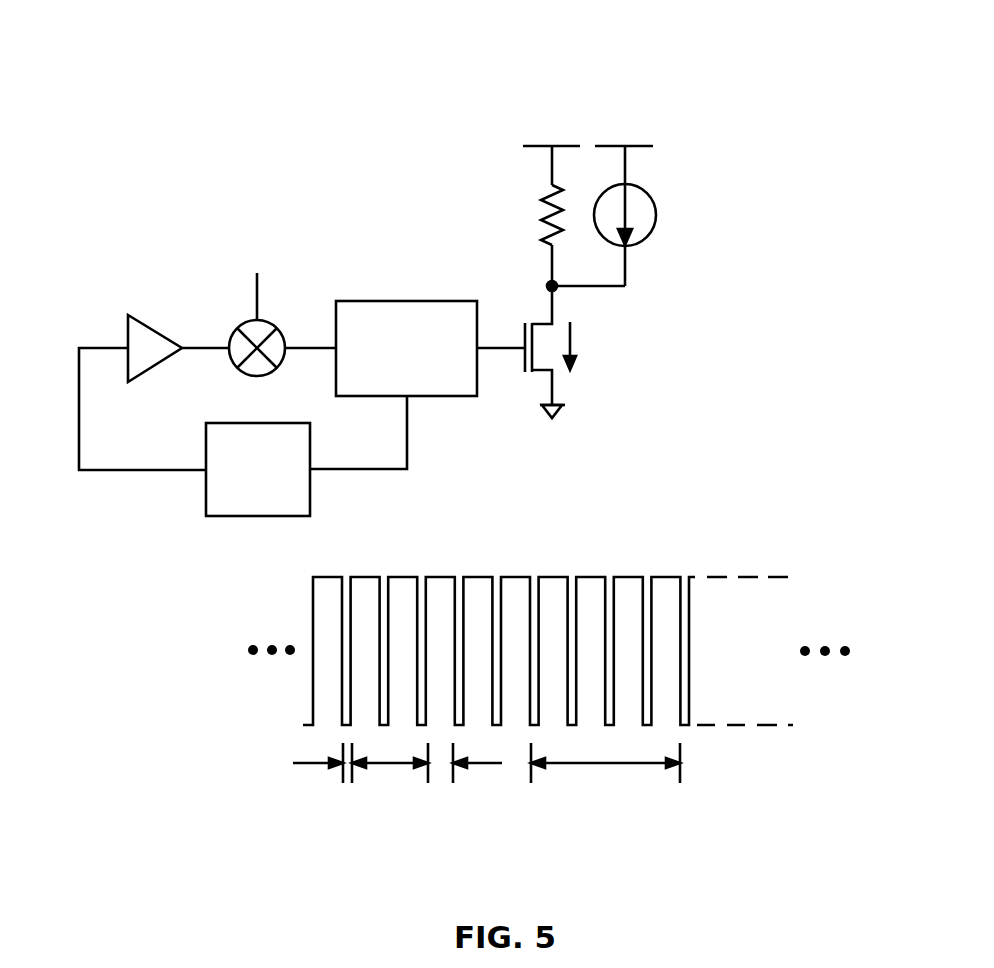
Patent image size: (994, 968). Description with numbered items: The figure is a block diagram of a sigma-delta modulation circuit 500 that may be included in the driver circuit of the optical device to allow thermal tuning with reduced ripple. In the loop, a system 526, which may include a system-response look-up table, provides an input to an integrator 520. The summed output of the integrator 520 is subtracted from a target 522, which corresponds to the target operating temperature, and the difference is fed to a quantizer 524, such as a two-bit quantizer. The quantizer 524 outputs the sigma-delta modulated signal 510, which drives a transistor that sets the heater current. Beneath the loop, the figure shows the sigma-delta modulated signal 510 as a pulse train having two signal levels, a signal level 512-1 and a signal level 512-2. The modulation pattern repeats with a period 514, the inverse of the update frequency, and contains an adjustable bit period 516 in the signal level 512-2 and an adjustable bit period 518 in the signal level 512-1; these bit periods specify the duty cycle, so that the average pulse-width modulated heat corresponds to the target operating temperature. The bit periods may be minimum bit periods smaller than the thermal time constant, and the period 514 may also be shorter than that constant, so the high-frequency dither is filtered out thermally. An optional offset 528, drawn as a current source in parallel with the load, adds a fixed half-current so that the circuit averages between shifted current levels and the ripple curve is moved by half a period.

The sigma-delta modulation circuit 500 is at (398, 82).
The sigma-delta modulated signal 510 is at (495, 348).
The signal level 512-1 is at (789, 577).
The signal level 512-2 is at (784, 724).
The period 514 is at (605, 765).
The adjustable bit period 516 is at (347, 782).
The adjustable bit period 518 is at (440, 780).
The integrator 520 is at (157, 330).
The target 522 is at (256, 273).
The quantizer 524 is at (389, 372).
The system 526 is at (241, 496).
The offset 528 is at (655, 212).